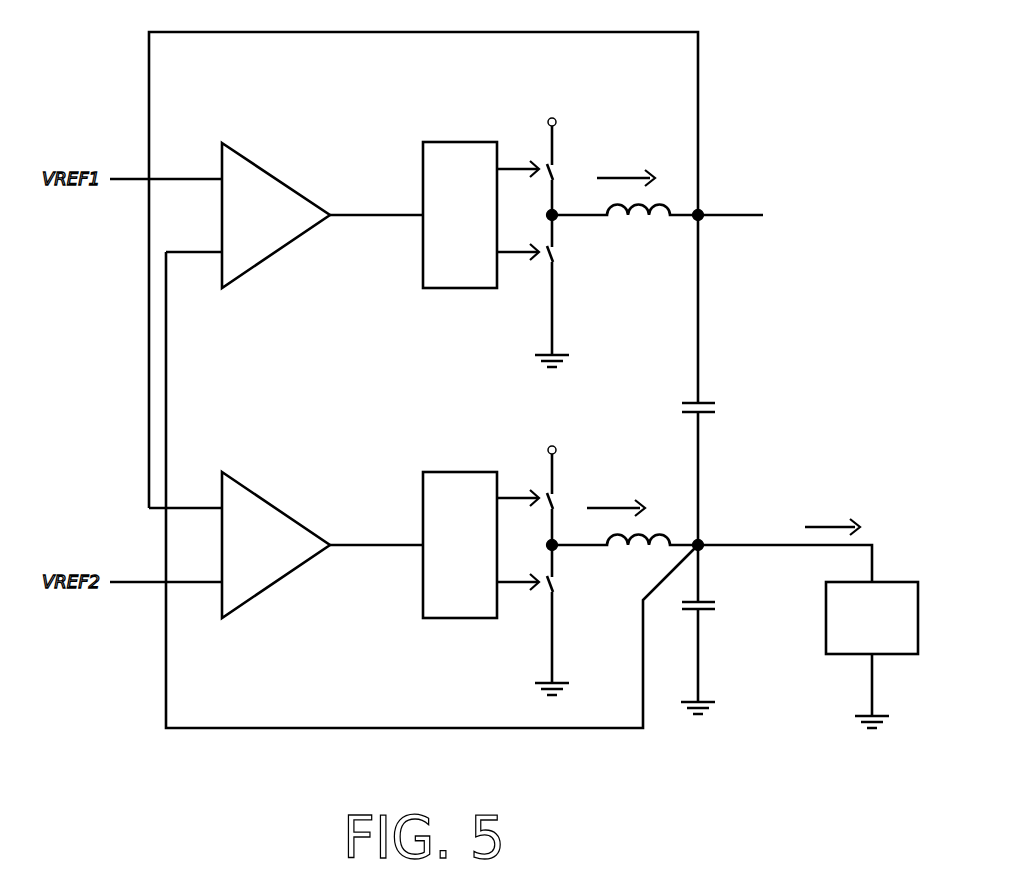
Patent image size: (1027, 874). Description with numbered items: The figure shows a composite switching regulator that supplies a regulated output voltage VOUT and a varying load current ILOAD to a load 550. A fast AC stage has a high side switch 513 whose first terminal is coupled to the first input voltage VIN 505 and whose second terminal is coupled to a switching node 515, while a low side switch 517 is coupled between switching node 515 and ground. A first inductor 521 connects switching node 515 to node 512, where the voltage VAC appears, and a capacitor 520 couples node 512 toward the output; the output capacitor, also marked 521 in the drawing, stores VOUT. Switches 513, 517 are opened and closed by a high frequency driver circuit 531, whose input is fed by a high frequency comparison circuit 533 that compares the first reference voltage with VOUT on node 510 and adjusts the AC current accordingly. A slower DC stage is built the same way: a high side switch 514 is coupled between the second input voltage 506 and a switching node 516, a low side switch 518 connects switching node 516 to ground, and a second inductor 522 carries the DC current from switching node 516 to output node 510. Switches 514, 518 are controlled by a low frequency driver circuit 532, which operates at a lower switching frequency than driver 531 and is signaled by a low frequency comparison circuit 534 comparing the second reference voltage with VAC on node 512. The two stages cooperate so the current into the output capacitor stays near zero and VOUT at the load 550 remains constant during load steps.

The first input voltage VIN1 505 is at (548, 121).
The input voltage VIN2 506 is at (548, 449).
The node 510 is at (700, 542).
The node 512 is at (700, 212).
The first switch (high side switch) 513 is at (556, 172).
The first switch (high side switch) 514 is at (556, 501).
The switching node 515 is at (555, 220).
The switching node 516 is at (555, 550).
The second switch (low side switch) 517 is at (555, 255).
The second switch (low side switch) 518 is at (555, 583).
The capacitor C1 520 is at (707, 418).
The first inductor LAC 521 is at (628, 205).
The second inductor LDC 522 is at (628, 535).
The high frequency driver circuit (HF DRV) 531 is at (423, 160).
The low frequency driver circuit (LF DRV) 532 is at (423, 490).
The high frequency (HF) comparison circuit 533 is at (270, 175).
The low frequency (LF) comparison circuit 534 is at (270, 505).
The load 550 is at (872, 618).